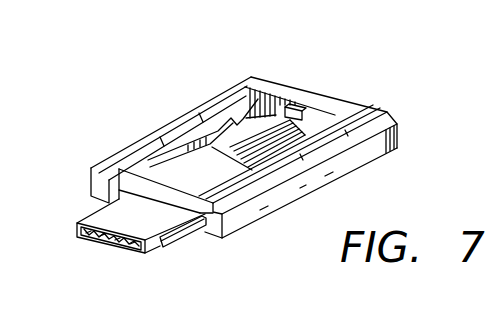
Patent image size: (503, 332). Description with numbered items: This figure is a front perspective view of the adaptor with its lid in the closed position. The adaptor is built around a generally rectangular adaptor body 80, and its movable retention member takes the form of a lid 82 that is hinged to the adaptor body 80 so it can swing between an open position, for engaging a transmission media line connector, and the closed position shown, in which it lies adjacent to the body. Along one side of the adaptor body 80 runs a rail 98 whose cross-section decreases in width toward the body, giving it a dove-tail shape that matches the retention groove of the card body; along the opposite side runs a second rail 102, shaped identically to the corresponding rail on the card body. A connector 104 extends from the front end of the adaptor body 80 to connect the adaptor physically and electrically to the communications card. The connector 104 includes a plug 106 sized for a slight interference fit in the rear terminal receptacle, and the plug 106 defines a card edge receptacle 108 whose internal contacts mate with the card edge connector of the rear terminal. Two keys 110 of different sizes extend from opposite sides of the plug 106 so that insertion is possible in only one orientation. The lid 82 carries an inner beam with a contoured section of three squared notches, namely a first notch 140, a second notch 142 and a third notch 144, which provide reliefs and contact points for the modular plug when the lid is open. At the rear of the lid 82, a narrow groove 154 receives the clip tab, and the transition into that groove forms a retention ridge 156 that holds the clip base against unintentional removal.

The adaptor body 80 is at (398, 95).
The lid 82 is at (283, 92).
The rail 98 is at (242, 117).
The second rail 102 is at (278, 207).
The connector 104 is at (106, 203).
The plug 106 is at (158, 248).
The card edge receptacle 108 is at (136, 251).
The key 110 is at (194, 241).
The first notch 140 is at (177, 126).
The second notch 142 is at (189, 140).
The third notch 144 is at (232, 112).
The narrow groove 154 is at (301, 110).
The retention ridge 156 is at (329, 108).